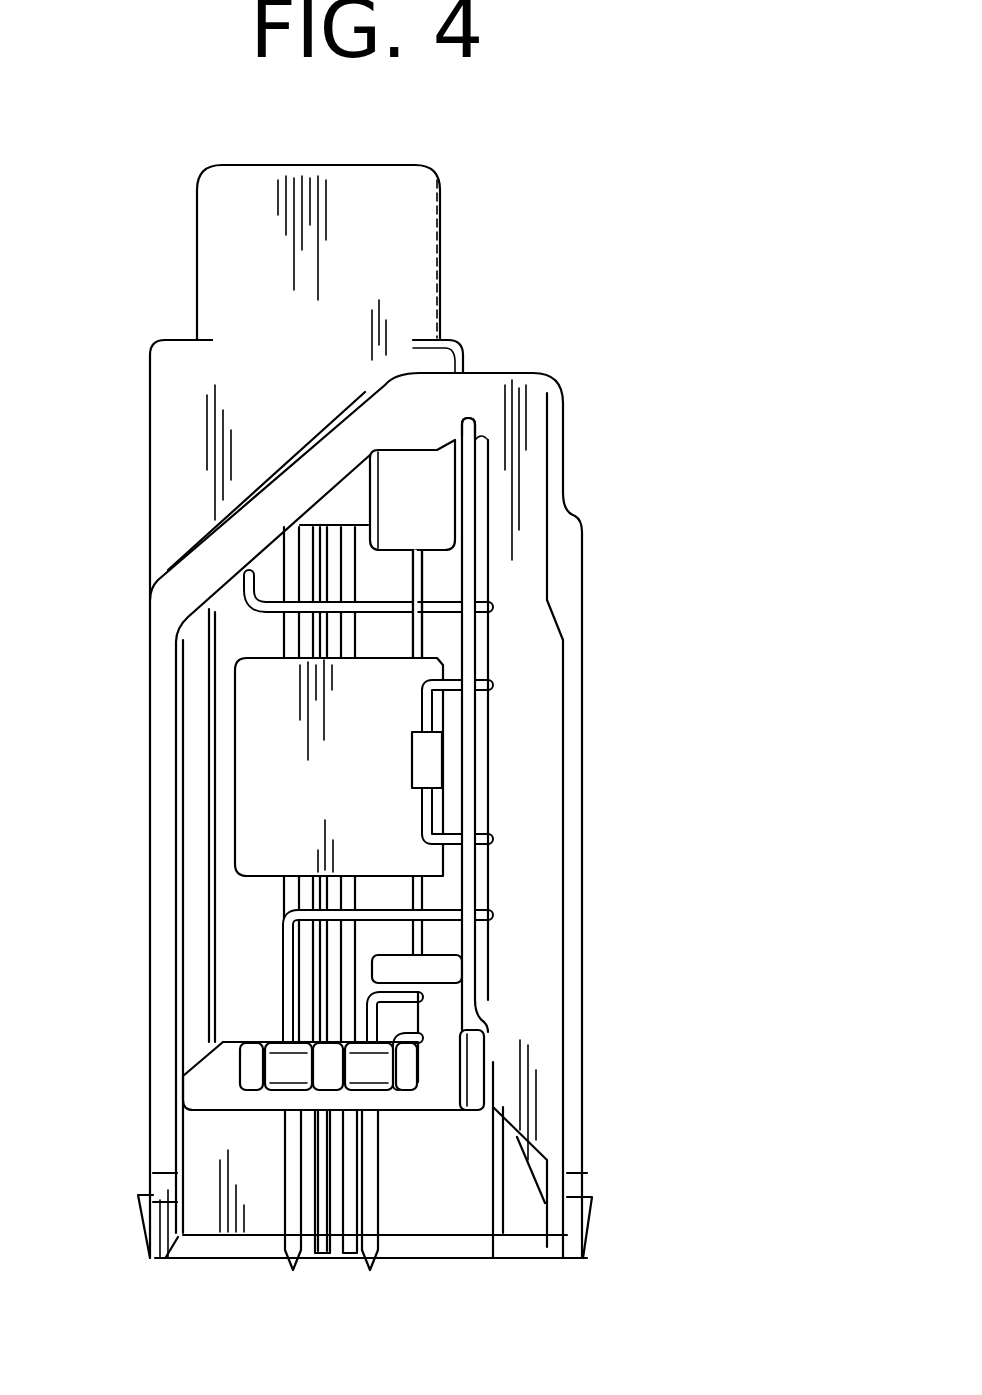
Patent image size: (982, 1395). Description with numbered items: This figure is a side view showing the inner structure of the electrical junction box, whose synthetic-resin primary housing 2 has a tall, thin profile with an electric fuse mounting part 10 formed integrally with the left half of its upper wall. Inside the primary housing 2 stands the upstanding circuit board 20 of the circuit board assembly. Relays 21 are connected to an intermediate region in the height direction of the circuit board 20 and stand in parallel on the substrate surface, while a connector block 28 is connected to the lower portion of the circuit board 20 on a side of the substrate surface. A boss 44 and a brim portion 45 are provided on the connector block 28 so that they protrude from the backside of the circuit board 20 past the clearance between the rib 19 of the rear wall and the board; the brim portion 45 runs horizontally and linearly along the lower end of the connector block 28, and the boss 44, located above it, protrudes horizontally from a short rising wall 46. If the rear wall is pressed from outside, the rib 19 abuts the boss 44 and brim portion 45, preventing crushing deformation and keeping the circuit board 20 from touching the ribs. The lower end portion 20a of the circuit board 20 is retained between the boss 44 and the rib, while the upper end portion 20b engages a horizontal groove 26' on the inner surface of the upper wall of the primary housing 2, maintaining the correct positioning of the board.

The primary housing 2 is at (584, 667).
The electric fuse mounting part 10 is at (437, 183).
The horizontal groove 26' is at (470, 405).
The upper end portion of the circuit board 20b is at (477, 422).
The circuit board 20 is at (482, 868).
The rib 19 is at (500, 947).
The relays 21 is at (248, 829).
The boss 44 is at (473, 1010).
The lower end portion of the circuit board 20a is at (473, 1057).
The brim portion 45 is at (473, 1102).
The short rising wall 46 is at (437, 1057).
The connector block 28 is at (411, 1115).